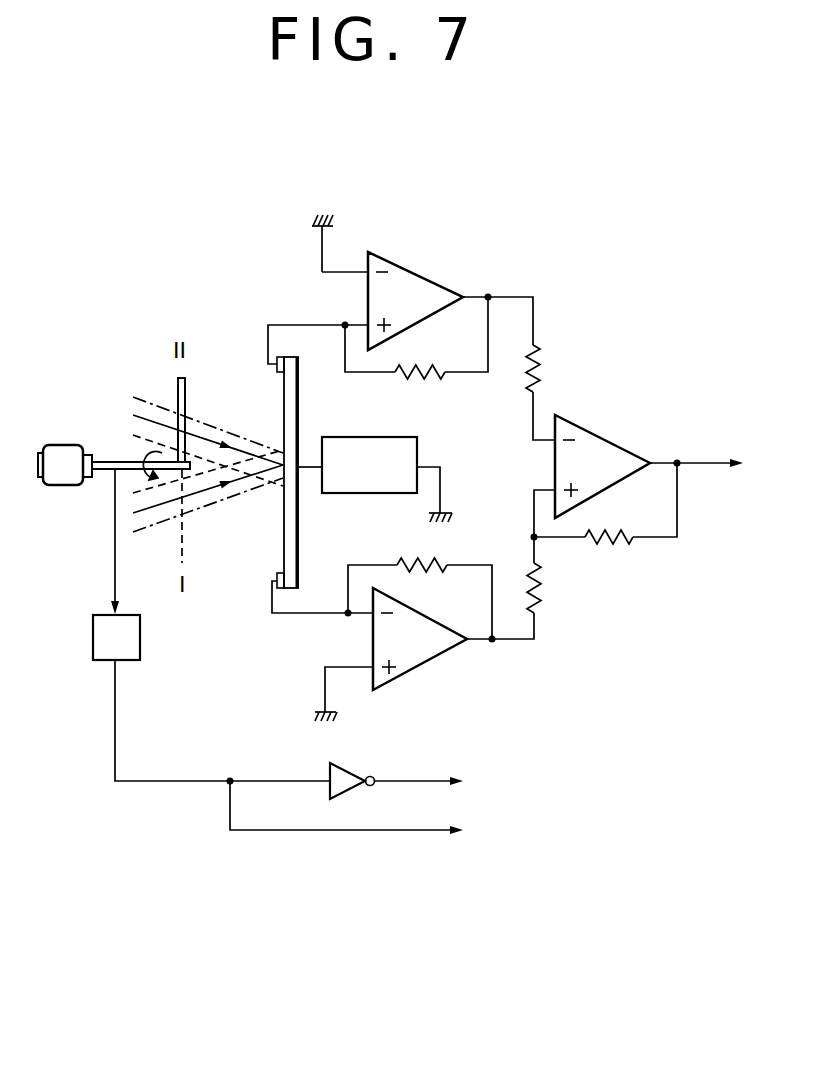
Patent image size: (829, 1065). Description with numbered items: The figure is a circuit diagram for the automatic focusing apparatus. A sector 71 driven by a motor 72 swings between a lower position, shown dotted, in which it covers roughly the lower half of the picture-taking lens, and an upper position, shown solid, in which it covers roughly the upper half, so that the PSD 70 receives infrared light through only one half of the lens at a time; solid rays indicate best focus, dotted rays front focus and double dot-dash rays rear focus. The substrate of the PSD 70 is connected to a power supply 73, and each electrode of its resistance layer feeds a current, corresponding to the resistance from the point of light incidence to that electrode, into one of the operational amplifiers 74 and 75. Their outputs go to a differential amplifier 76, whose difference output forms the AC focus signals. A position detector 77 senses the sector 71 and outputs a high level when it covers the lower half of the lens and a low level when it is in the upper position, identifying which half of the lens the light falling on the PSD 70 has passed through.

The PSD 70 is at (295, 550).
The sector 71 is at (178, 393).
The motor 72 is at (70, 445).
The power supply 73 is at (402, 437).
The operational amplifier 74 is at (422, 275).
The operational amplifier 75 is at (424, 665).
The differential amplifier 76 is at (598, 437).
The position detector 77 is at (140, 642).